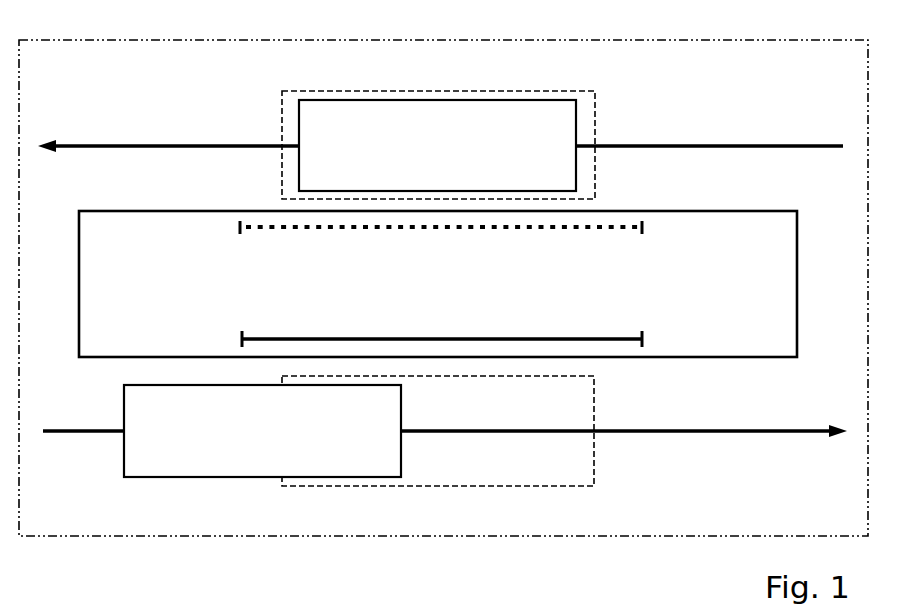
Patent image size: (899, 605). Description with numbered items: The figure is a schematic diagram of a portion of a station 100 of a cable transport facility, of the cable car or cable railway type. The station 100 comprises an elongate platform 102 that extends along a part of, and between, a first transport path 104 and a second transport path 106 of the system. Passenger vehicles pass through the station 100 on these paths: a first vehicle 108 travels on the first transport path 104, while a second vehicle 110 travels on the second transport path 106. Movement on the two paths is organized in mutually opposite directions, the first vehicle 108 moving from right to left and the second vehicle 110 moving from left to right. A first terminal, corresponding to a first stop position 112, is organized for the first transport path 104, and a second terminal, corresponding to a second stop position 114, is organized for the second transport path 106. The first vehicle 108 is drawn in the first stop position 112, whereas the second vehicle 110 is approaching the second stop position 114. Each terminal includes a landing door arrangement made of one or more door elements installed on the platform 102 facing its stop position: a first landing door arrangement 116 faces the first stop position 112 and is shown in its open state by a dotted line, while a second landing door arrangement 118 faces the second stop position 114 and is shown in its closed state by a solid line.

The station 100 is at (443, 274).
The platform 102 is at (438, 271).
The first transport path 104 is at (440, 131).
The second transport path 106 is at (443, 416).
The first vehicle 108 is at (468, 145).
The second vehicle 110 is at (284, 430).
The first stop position 112 is at (438, 131).
The second stop position 114 is at (438, 446).
The first landing door arrangement 116 is at (416, 242).
The second landing door arrangement 118 is at (467, 327).